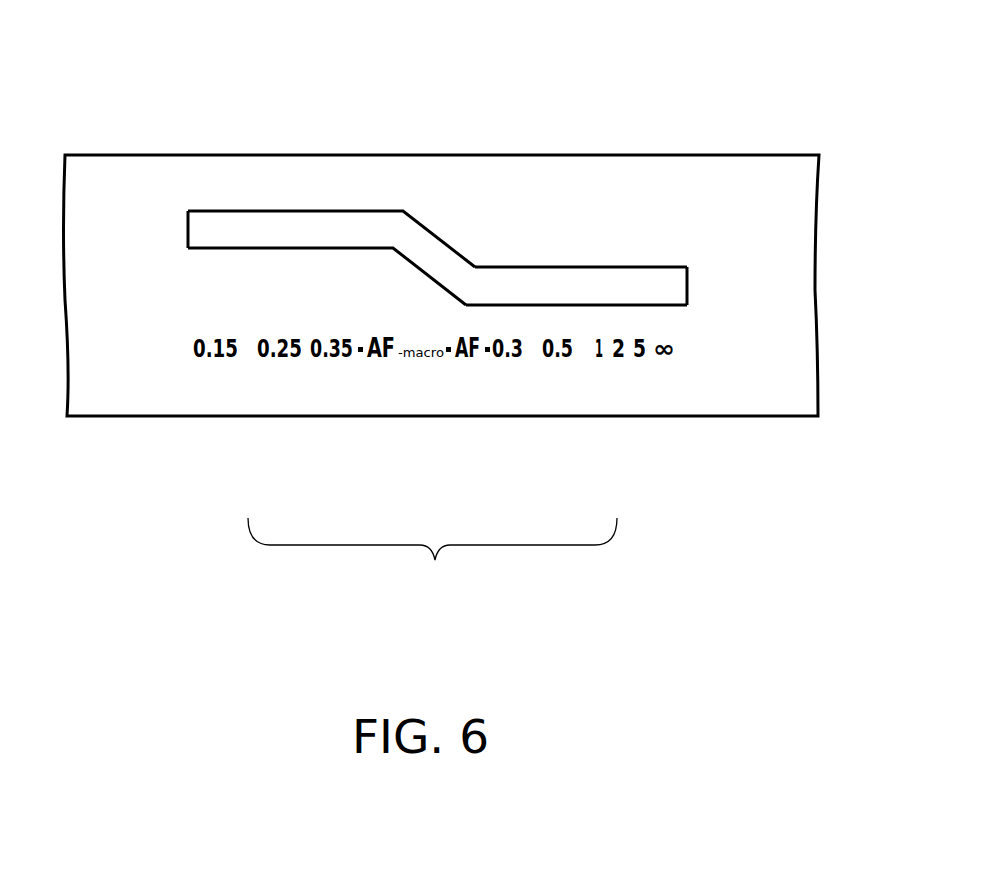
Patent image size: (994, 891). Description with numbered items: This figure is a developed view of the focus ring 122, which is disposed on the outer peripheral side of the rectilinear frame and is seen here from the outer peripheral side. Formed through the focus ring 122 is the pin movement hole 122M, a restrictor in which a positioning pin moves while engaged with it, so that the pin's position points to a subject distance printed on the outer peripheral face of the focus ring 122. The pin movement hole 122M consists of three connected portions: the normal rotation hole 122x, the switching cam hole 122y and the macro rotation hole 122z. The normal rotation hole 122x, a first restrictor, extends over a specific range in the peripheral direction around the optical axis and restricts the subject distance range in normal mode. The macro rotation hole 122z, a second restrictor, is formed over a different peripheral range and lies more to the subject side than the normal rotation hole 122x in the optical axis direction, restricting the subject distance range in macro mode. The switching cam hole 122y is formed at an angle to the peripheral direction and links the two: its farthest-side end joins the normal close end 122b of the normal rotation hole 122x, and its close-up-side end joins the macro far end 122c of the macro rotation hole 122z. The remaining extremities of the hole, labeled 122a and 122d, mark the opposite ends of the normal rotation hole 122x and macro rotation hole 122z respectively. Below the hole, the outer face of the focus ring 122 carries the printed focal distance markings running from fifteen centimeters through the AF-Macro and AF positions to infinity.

The focus ring 122 is at (75, 178).
The groove right end portion 122a is at (688, 273).
The normal close end 122b is at (476, 265).
The macro far end 122c is at (415, 227).
The groove left end portion 122d is at (188, 230).
The normal rotation hole 122x is at (592, 277).
The switching cam hole 122y is at (422, 262).
The macro rotation hole 122z is at (247, 237).
The pin movement hole 122M is at (432, 562).